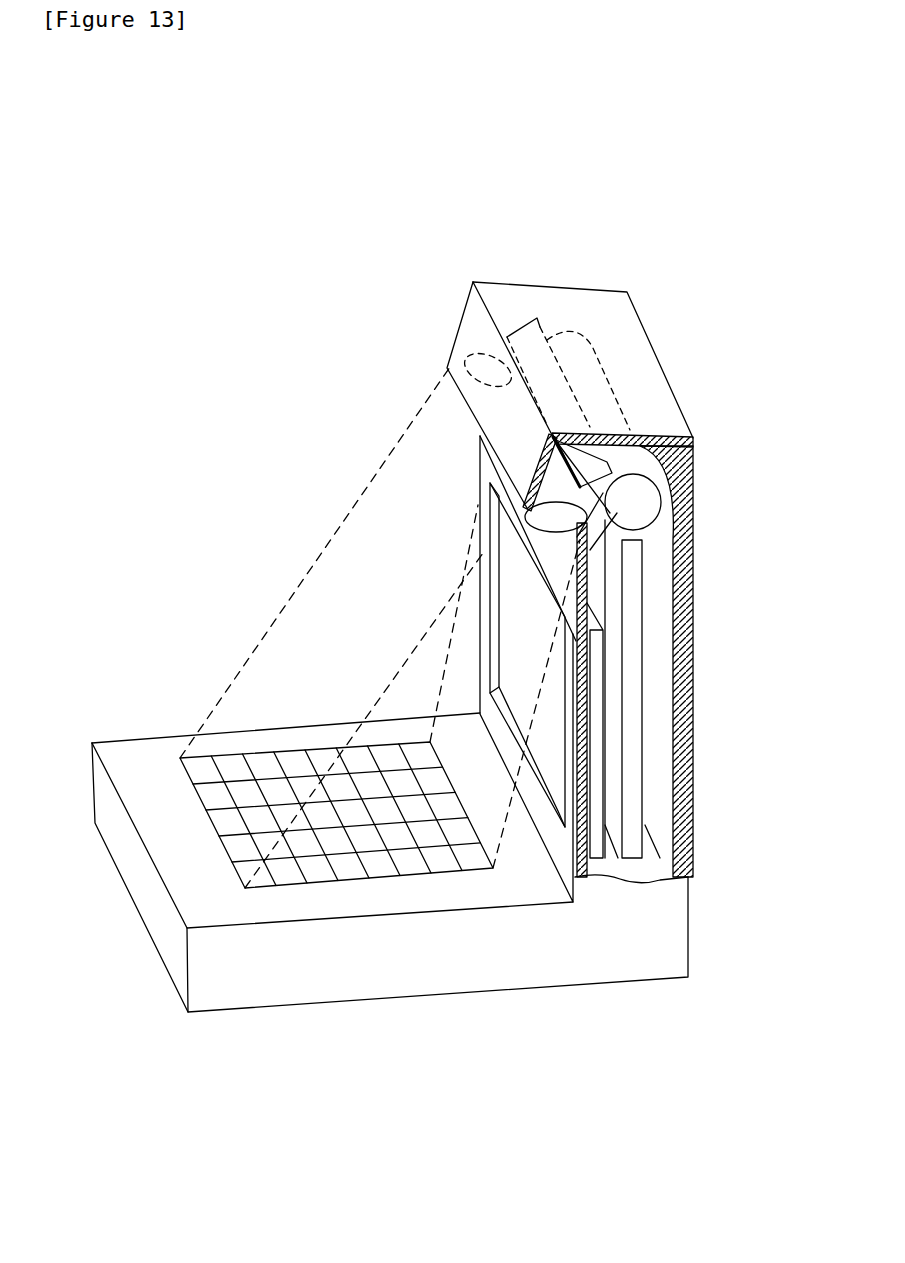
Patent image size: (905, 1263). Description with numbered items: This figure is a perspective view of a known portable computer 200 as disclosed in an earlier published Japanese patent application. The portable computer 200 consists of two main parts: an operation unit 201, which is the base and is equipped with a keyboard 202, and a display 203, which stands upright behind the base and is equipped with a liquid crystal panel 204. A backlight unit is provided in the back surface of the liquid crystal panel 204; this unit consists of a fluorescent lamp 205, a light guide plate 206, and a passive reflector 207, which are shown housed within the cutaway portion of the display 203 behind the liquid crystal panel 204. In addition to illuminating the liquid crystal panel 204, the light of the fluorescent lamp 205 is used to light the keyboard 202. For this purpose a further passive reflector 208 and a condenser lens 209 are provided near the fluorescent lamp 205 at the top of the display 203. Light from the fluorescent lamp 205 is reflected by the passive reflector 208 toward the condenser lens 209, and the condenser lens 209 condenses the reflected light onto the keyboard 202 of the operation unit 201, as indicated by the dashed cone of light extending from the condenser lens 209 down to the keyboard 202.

The portable computer 200 is at (234, 303).
The operation unit 201 is at (245, 1013).
The keyboard 202 is at (387, 865).
The display 203 is at (656, 346).
The liquid crystal panel 204 is at (535, 655).
The fluorescent lamp 205 is at (623, 468).
The light guide plate 206 is at (633, 643).
The passive reflector 207 is at (674, 728).
The passive reflector 208 is at (510, 333).
The condenser lens 209 is at (462, 345).